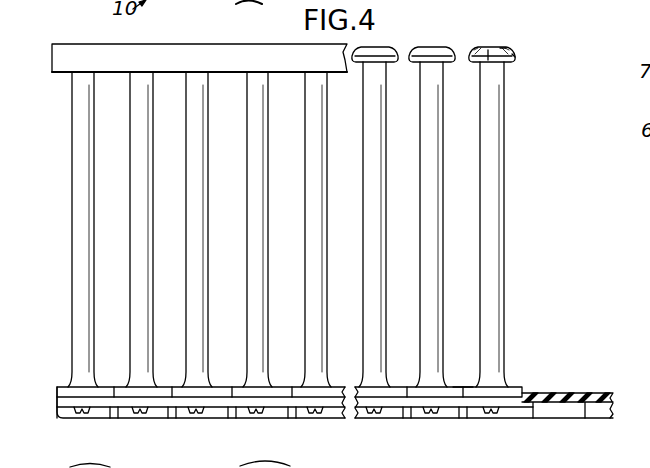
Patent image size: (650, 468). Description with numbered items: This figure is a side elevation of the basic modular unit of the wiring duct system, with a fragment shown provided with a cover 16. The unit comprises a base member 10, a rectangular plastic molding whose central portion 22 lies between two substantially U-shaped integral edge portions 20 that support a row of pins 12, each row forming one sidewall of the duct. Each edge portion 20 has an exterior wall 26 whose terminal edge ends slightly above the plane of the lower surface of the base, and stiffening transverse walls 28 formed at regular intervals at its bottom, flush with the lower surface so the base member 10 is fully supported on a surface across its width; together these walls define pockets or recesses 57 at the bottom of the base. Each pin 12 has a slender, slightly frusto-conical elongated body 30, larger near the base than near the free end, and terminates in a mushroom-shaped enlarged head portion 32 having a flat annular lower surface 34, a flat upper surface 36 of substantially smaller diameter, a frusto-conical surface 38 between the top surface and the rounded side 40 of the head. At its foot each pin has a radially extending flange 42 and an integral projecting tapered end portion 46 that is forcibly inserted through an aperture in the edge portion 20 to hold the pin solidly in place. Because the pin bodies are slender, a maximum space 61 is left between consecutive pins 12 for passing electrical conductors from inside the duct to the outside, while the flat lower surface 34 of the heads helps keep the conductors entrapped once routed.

The base member 10 is at (55, 403).
The pins 12 is at (62, 0).
The cover 16 is at (170, 43).
The edge portions 20 is at (106, 400).
The central portion 22 is at (232, 4).
The exterior wall 26 is at (306, 400).
The stiffening transverse walls 28 is at (227, 417).
The elongated body 30 is at (505, 190).
The enlarged head portion 32 is at (496, 44).
The flat annular lower surface 34 is at (355, 60).
The flat upper surface 36 is at (488, 54).
The frusto-conical surface 38 is at (504, 48).
The rounded side 40 is at (516, 55).
The radially extending flange 42 is at (471, 387).
The projecting tapered end portion 46 is at (497, 415).
The pockets or recesses 57 is at (339, 414).
The space 61 is at (168, 179).